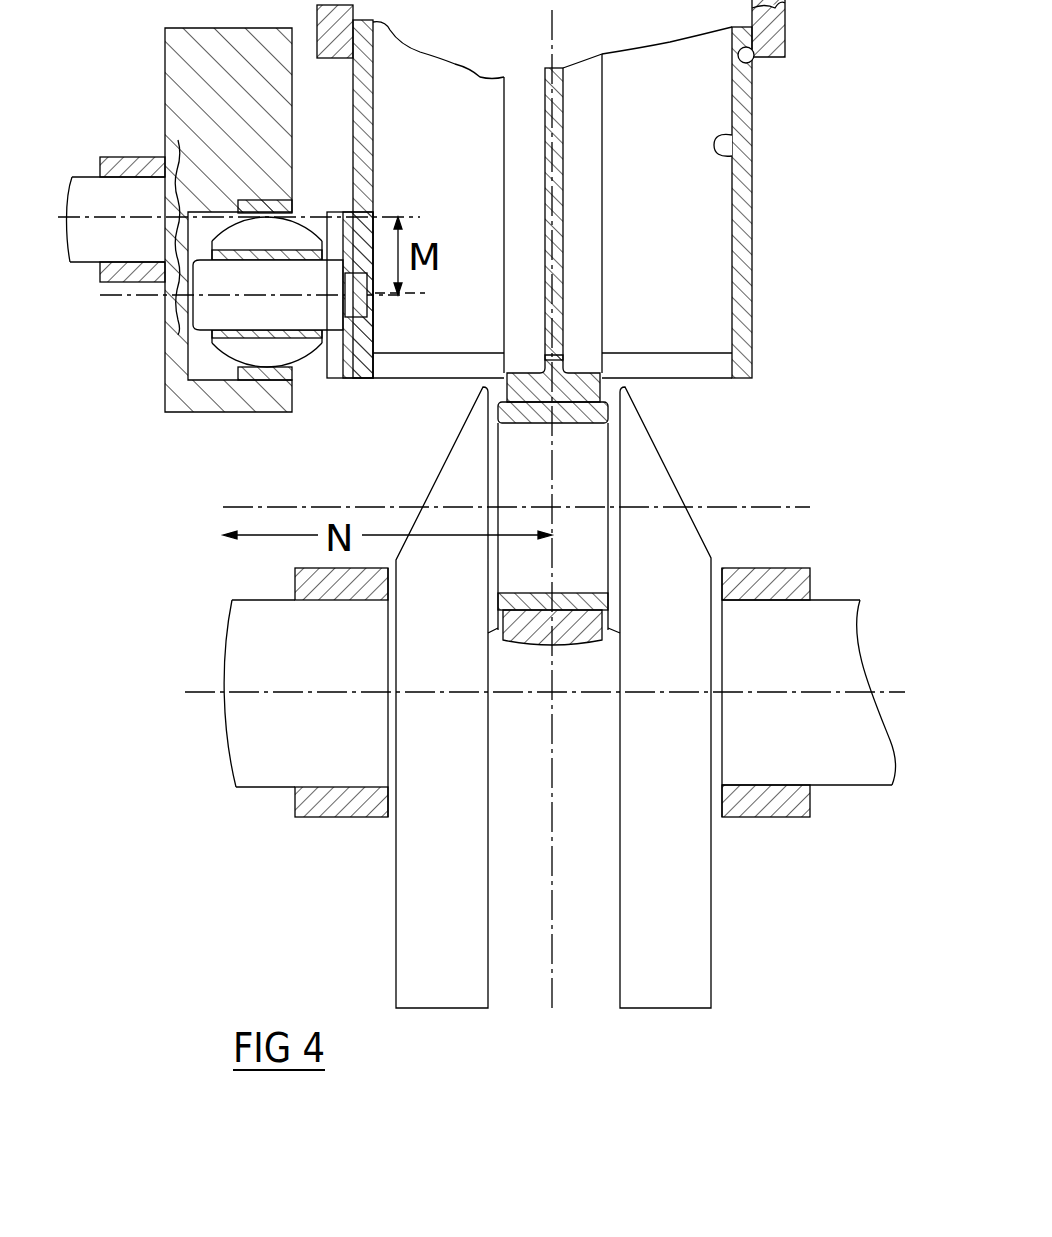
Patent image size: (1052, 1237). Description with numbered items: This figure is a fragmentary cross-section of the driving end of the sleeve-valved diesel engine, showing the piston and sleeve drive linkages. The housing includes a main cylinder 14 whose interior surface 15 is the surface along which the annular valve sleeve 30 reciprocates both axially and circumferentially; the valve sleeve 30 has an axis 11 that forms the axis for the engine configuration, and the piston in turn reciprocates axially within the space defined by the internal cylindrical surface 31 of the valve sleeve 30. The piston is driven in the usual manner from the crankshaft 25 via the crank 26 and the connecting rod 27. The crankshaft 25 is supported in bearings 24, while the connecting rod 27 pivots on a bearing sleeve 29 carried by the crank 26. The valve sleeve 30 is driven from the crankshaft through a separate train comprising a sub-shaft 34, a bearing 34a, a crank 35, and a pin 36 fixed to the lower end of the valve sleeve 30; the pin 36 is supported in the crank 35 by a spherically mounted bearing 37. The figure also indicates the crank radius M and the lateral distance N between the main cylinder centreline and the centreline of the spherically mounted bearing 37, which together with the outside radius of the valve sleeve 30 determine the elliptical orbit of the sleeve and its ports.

The axis 11 is at (555, 855).
The main cylinder 14 is at (787, 40).
The interior surface 15 is at (752, 62).
The bearings 24 is at (348, 798).
The crankshaft 25 is at (285, 740).
The crank 26 is at (460, 480).
The connecting rod 27 is at (587, 292).
The bearing sleeve 29 is at (597, 412).
The valve sleeve 30 is at (742, 222).
The internal cylindrical surface 31 is at (733, 160).
The sub-shaft 34 is at (119, 200).
The bearing 34a is at (117, 268).
The crank 35 is at (205, 412).
The pin 36 is at (220, 307).
The spherically mounted bearing 37 is at (298, 367).